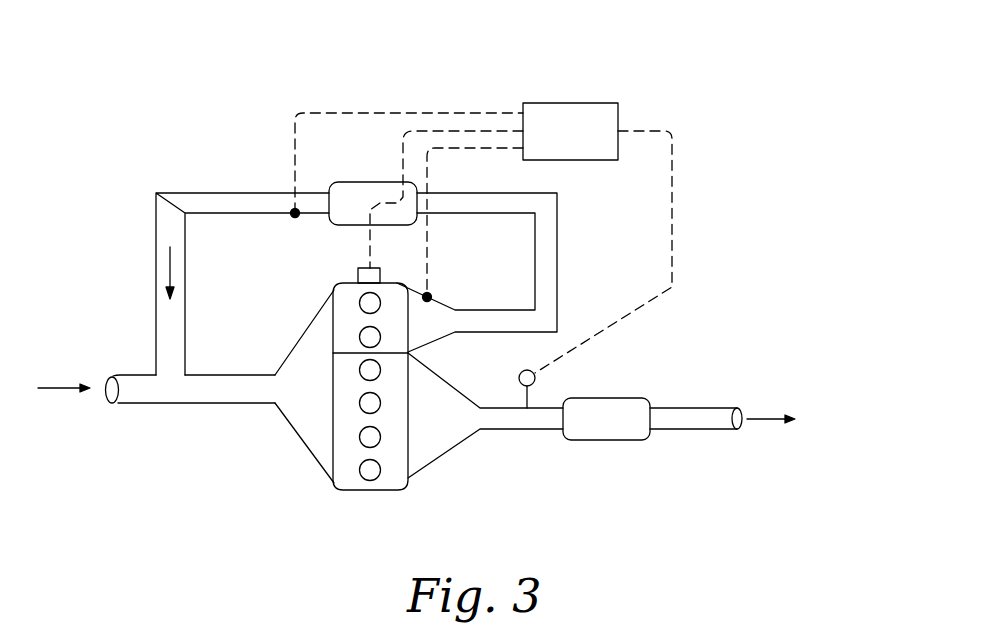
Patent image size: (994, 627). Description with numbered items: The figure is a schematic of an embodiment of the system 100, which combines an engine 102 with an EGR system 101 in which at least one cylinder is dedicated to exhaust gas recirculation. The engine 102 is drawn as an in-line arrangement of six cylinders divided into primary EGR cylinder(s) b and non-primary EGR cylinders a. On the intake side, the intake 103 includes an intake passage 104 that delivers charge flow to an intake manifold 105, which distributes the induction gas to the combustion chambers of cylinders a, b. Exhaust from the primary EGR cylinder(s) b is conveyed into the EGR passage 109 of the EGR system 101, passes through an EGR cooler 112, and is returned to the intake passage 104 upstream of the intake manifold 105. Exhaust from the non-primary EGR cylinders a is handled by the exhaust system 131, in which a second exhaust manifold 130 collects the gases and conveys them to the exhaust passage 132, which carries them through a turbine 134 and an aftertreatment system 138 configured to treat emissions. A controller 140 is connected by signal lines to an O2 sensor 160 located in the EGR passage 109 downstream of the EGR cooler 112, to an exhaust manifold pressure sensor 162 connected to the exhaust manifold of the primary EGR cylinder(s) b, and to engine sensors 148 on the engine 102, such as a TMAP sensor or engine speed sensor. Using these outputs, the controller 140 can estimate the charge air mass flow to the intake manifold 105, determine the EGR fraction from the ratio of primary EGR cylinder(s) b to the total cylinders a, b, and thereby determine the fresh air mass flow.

The system 100 is at (770, 164).
The EGR system 101 is at (190, 155).
The engine 102 is at (378, 505).
The intake 103 is at (153, 500).
The intake passage 104 is at (113, 404).
The intake manifold 105 is at (275, 408).
The EGR passage 109 is at (558, 256).
The EGR cooler 112 is at (347, 181).
The second exhaust manifold 130 is at (438, 448).
The exhaust system 131 is at (621, 462).
The exhaust passage 132 is at (692, 408).
The turbine 134 is at (518, 376).
The aftertreatment system 138 is at (606, 398).
The controller 140 is at (630, 118).
The engine sensors 148 is at (362, 262).
The O2 sensor 160 is at (293, 218).
The exhaust manifold pressure sensor 162 is at (430, 294).
The non-primary EGR cylinders a is at (359, 403).
The primary EGR cylinder b is at (359, 335).